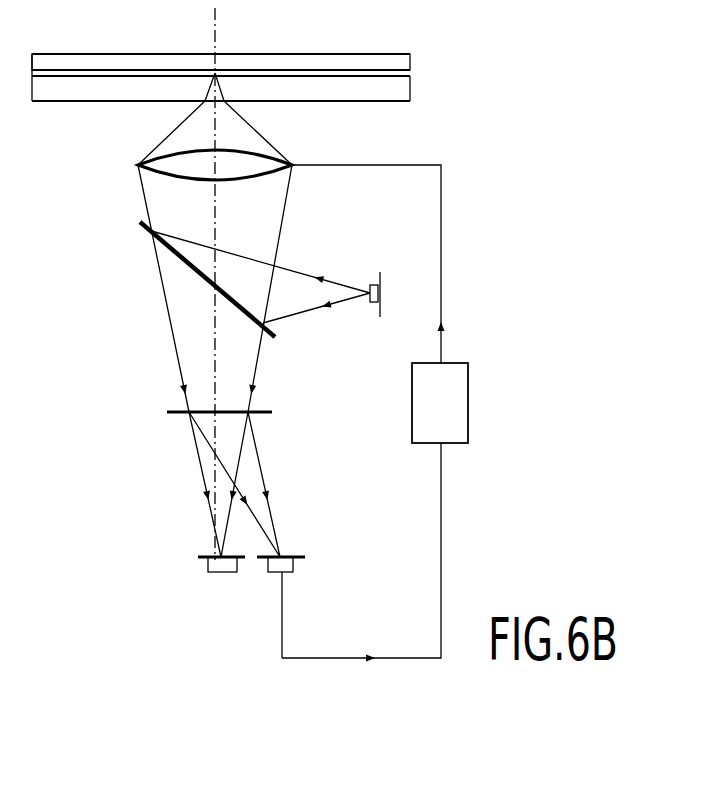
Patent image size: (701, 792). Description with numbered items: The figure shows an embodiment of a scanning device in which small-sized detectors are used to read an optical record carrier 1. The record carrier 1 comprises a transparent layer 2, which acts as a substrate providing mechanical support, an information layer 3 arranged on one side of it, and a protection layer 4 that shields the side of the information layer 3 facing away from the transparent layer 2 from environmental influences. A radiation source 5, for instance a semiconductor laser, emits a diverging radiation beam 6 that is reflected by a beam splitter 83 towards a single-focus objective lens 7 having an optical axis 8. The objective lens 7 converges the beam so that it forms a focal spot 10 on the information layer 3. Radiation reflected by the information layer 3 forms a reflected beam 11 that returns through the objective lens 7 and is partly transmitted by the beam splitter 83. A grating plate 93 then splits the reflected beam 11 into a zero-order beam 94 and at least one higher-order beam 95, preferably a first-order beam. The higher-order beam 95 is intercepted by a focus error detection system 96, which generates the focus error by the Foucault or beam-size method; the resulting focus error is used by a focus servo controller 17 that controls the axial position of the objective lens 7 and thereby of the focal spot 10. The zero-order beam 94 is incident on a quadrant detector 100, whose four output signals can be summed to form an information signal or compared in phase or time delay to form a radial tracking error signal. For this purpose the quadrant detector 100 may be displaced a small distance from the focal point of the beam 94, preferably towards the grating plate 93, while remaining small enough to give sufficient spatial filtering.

The optical record carrier 1 is at (446, 26).
The transparent layer 2 is at (400, 90).
The information layer 3 is at (405, 74).
The protection layer 4 is at (405, 58).
The radiation source 5 is at (372, 281).
The radiation beam 6 is at (346, 285).
The objective lens 7 is at (160, 170).
The optical axis 8 is at (212, 20).
The focal spot 10 is at (217, 72).
The reflected beam 11 is at (177, 366).
The focus servo controller 17 is at (470, 401).
The beam splitter 83 is at (148, 232).
The grating plate 93 is at (273, 410).
The zero-order beam 94 is at (198, 465).
The higher-order beam 95 is at (262, 464).
The focus error detection system 96 is at (292, 574).
The quadrant detector 100 is at (215, 574).